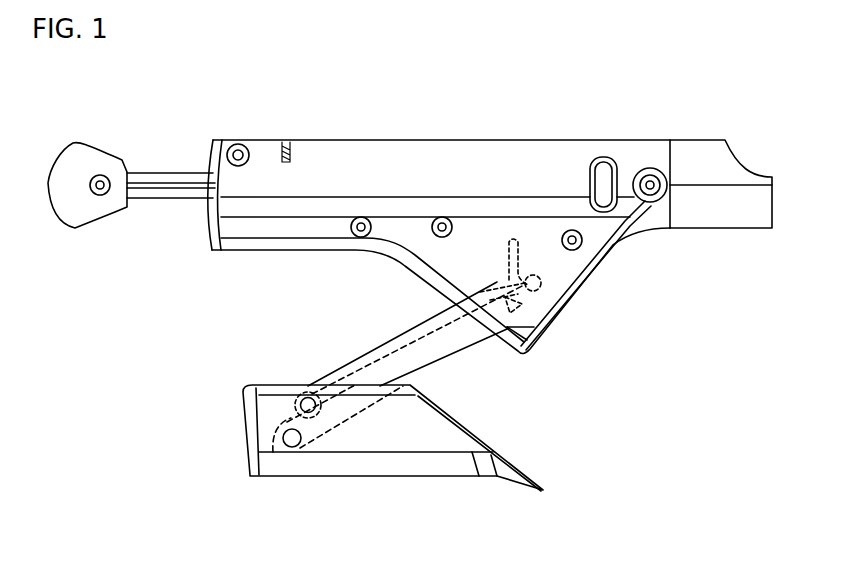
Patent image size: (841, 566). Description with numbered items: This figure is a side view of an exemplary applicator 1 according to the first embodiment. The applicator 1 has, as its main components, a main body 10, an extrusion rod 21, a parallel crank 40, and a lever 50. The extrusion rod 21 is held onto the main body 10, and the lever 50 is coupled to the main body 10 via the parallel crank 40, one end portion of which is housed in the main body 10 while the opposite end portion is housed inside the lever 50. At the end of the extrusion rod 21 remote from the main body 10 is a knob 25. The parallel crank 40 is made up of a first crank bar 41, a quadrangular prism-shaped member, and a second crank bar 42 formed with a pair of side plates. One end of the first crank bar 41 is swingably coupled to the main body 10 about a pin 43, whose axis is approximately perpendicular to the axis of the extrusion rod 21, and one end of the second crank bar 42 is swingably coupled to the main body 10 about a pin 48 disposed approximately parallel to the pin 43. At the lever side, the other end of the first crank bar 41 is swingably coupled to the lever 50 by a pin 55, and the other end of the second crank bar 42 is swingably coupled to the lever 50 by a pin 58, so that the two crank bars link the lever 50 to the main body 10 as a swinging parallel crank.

The applicator 1 is at (645, 93).
The main body 10 is at (377, 123).
The extrusion rod 21 is at (155, 170).
The knob 25 is at (85, 157).
The parallel crank 40 is at (353, 338).
The first crank bar 41 is at (397, 328).
The second crank bar 42 is at (463, 348).
The pin 43 is at (590, 285).
The pin 48 is at (587, 320).
The lever 50 is at (363, 492).
The pin 55 is at (302, 387).
The pin 58 is at (292, 450).